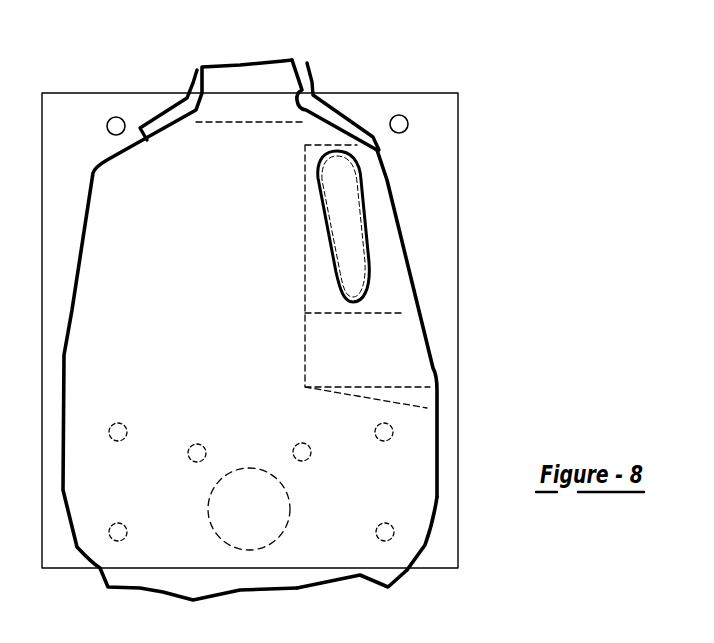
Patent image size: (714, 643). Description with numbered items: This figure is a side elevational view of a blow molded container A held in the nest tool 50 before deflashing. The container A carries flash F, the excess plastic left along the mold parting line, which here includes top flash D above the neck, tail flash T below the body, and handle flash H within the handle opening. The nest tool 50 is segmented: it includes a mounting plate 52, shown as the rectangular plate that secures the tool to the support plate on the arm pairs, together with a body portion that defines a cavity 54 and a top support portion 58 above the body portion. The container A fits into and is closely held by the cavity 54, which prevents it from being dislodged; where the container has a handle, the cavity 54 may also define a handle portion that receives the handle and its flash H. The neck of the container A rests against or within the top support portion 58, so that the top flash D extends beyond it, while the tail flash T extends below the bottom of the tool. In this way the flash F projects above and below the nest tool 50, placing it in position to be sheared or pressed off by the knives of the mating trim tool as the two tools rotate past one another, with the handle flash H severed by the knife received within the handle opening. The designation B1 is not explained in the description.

The nest tool 50 is at (443, 270).
The mounting plate 52 is at (457, 235).
The cavity 54 is at (407, 573).
The top support portion 58 is at (302, 90).
The flash F is at (197, 65).
The top flash D is at (295, 60).
The handle flash H is at (353, 197).
The right side edge B1 is at (437, 347).
The blow molded container A is at (415, 510).
The tail flash T is at (297, 580).